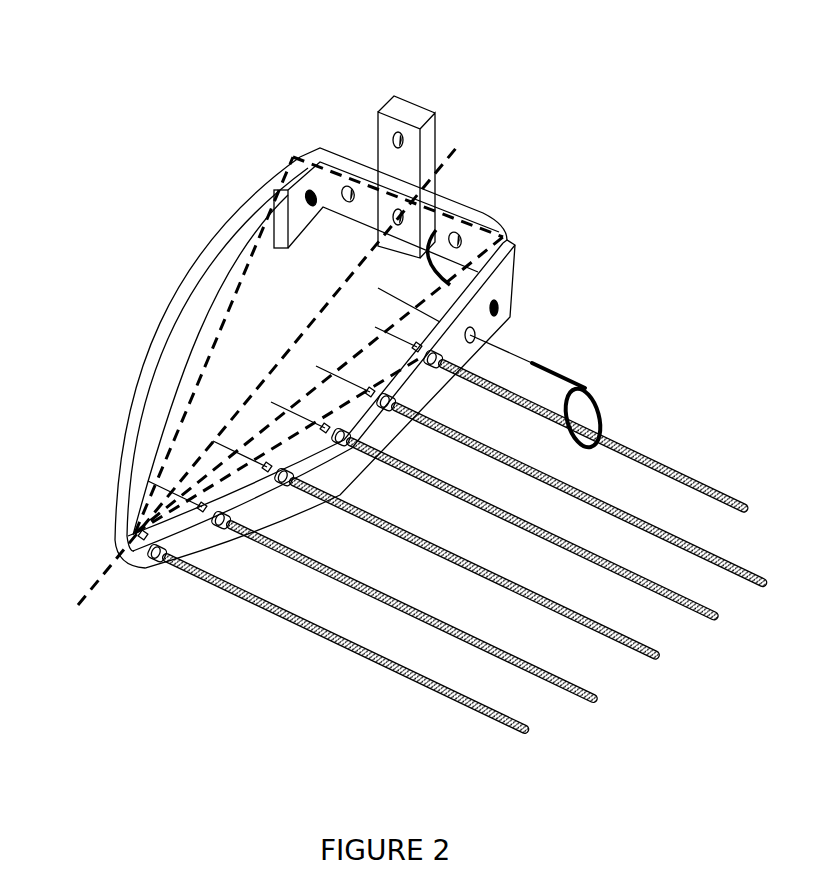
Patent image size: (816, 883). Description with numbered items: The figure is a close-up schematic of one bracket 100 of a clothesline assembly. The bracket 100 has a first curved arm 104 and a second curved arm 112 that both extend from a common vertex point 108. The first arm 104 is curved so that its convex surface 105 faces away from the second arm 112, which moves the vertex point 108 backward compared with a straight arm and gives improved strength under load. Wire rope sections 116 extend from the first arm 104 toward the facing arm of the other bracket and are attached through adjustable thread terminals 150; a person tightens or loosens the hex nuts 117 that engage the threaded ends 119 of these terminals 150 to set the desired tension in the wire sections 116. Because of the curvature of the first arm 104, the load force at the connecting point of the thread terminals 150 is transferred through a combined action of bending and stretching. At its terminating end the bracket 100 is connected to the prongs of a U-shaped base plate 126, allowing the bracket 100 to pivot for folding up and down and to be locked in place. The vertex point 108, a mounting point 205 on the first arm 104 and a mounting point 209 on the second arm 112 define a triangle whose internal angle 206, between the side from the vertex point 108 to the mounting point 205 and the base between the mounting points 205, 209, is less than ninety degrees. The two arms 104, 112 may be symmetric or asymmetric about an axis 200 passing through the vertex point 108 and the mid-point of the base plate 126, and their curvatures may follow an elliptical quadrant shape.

The bracket 100 is at (135, 262).
The first curved arm 104 is at (290, 215).
The convex surface 105 is at (332, 465).
The vertex point 108 is at (118, 553).
The second curved arm 112 is at (131, 402).
The wire rope section 116 is at (560, 540).
The nut 117 is at (238, 500).
The threaded end 119 is at (493, 430).
The U-shaped base plate 126 is at (485, 215).
The adjustable thread terminal 150 is at (497, 392).
The axis 200 is at (275, 362).
The mounting point 205 is at (503, 253).
The internal angle 206 is at (405, 268).
The mounting point 209 is at (296, 158).